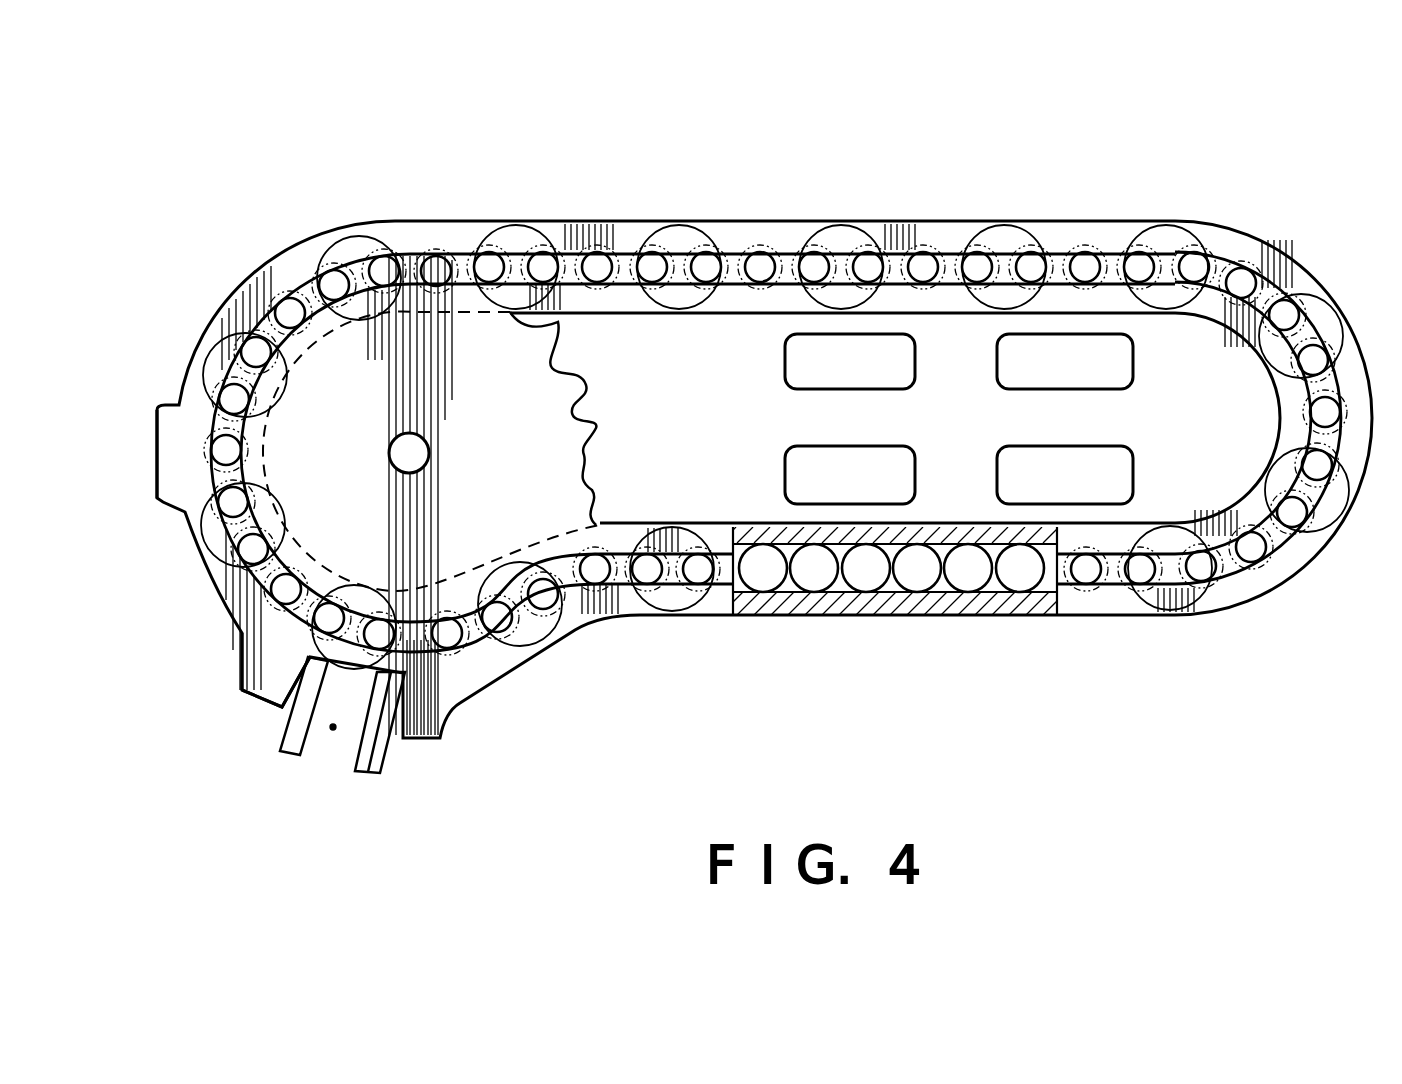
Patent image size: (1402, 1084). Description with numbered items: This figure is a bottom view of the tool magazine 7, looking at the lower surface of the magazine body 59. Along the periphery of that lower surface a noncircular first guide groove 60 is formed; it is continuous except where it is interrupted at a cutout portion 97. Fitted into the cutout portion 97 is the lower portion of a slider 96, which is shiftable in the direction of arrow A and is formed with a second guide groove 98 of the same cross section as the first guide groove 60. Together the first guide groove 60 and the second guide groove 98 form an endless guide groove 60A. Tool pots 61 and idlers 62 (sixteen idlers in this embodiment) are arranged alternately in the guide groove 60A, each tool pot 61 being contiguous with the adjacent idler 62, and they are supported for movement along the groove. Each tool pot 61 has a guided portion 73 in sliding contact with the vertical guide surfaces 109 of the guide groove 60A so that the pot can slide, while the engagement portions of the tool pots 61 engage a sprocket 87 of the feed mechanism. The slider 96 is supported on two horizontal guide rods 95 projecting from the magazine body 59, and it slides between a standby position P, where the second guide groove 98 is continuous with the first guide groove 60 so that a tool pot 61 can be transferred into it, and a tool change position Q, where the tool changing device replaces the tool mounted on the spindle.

The tool magazine 7 is at (248, 260).
The magazine body 59 is at (170, 440).
The first guide groove 60 is at (282, 680).
The endless guide groove 60A is at (1287, 295).
The tool pot 61 is at (470, 212).
The idler 62 is at (1050, 225).
The guided portion 73 is at (1225, 575).
The sprocket 87 is at (603, 470).
The guide rod 95 is at (378, 765).
The slider 96 is at (232, 620).
The cutout portion 97 is at (331, 706).
The second guide groove 98 is at (283, 752).
The vertical guide surfaces 109 is at (1165, 612).
The direction of arrow A is at (376, 603).
The standby position P is at (353, 691).
The tool change position Q is at (333, 727).